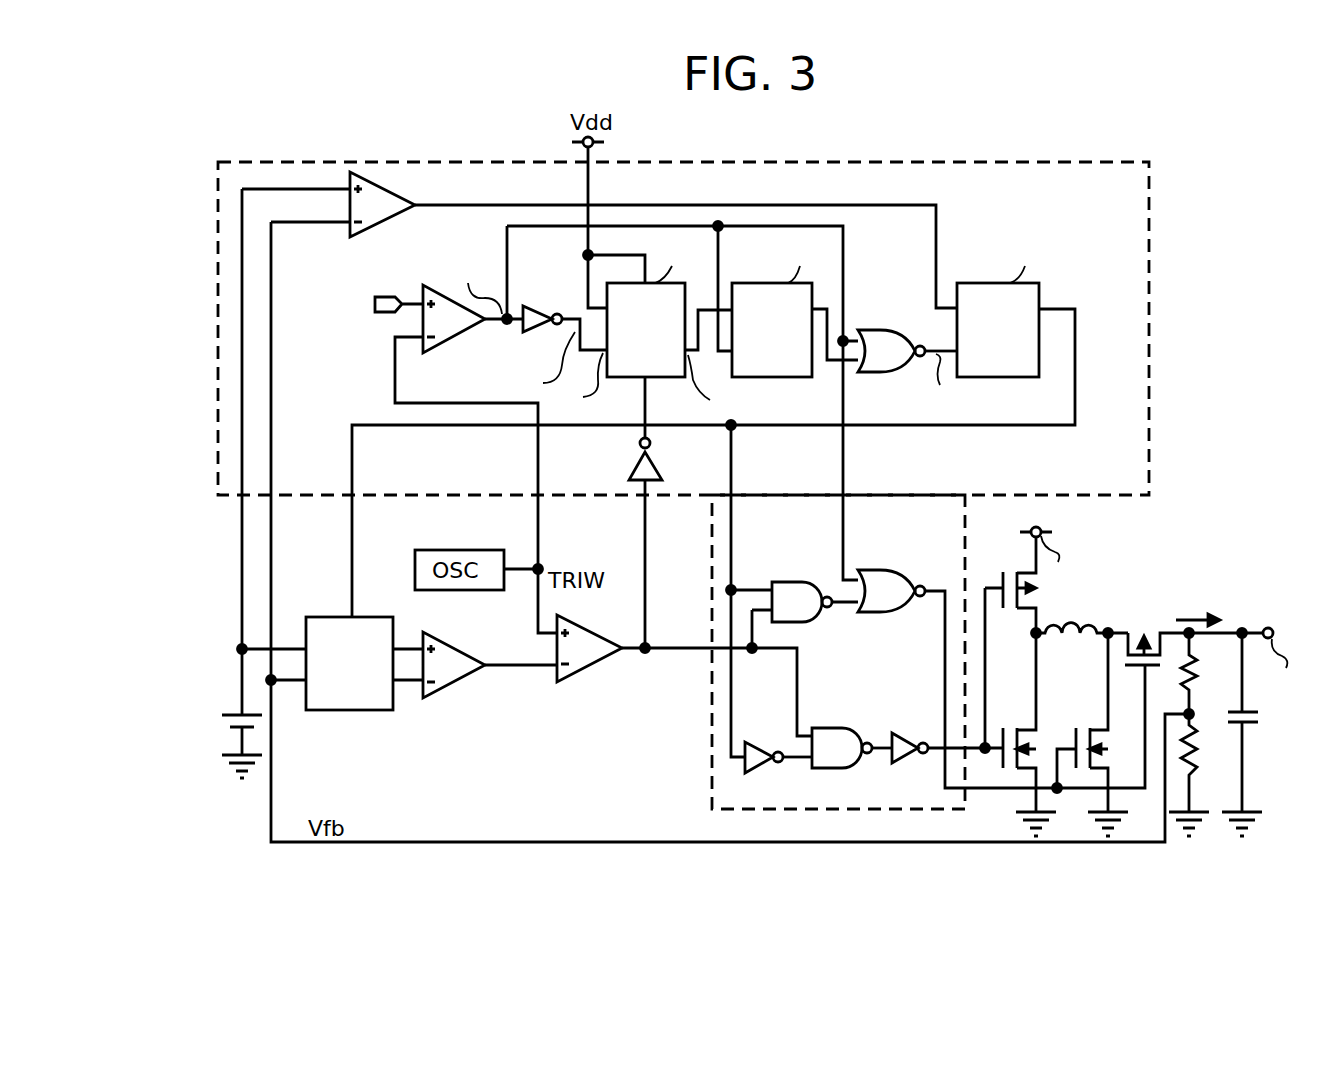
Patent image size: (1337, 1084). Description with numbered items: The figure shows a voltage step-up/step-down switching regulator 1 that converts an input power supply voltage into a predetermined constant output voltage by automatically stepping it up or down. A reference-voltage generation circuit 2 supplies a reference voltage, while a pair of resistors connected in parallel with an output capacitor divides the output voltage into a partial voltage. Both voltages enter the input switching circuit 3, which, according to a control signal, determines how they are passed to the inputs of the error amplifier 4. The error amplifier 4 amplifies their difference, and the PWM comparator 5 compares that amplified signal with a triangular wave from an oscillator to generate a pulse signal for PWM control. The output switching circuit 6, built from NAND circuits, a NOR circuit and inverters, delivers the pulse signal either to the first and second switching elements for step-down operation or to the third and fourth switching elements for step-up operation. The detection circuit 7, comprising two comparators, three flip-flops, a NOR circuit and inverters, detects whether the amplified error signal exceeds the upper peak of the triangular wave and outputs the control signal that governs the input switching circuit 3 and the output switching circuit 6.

The voltage step-up/step-down switching regulator 1 is at (1216, 254).
The reference-voltage generation circuit 2 is at (224, 724).
The input switching circuit 3 is at (365, 710).
The error amplifier 4 is at (446, 690).
The PWM comparator 5 is at (582, 680).
The output switching circuit 6 is at (733, 763).
The detection circuit 7 is at (1122, 202).